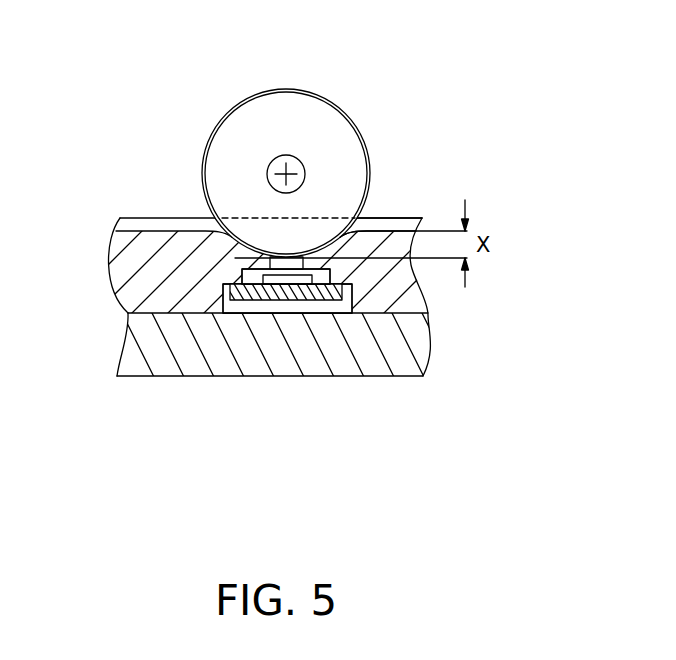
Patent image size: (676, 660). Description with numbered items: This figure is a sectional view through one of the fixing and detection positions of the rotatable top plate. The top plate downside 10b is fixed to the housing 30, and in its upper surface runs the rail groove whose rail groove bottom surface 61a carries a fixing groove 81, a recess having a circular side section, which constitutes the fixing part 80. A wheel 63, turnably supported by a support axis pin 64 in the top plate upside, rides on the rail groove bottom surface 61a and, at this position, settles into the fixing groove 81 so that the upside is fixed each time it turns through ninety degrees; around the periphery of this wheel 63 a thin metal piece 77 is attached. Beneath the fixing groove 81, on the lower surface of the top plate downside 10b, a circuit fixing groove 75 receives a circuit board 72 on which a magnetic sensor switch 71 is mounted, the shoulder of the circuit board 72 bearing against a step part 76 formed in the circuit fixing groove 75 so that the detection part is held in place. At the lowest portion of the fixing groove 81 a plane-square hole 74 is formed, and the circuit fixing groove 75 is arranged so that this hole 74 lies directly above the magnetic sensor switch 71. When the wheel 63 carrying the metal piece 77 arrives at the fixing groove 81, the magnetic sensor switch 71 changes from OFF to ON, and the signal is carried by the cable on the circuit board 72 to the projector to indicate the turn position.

The top plate downside 10b is at (137, 291).
The housing 30 is at (137, 342).
The rail groove bottom surface 61a is at (407, 220).
The wheel 63 is at (203, 188).
The support axis pin 64 is at (283, 155).
The magnetic sensor switch 71 is at (308, 309).
The circuit board 72 is at (372, 300).
The hole 74 is at (293, 277).
The circuit fixing groove 75 is at (300, 258).
The step part 76 is at (234, 304).
The metal piece 77 is at (206, 144).
The fixing part 80 is at (482, 326).
The fixing groove 81 is at (362, 267).